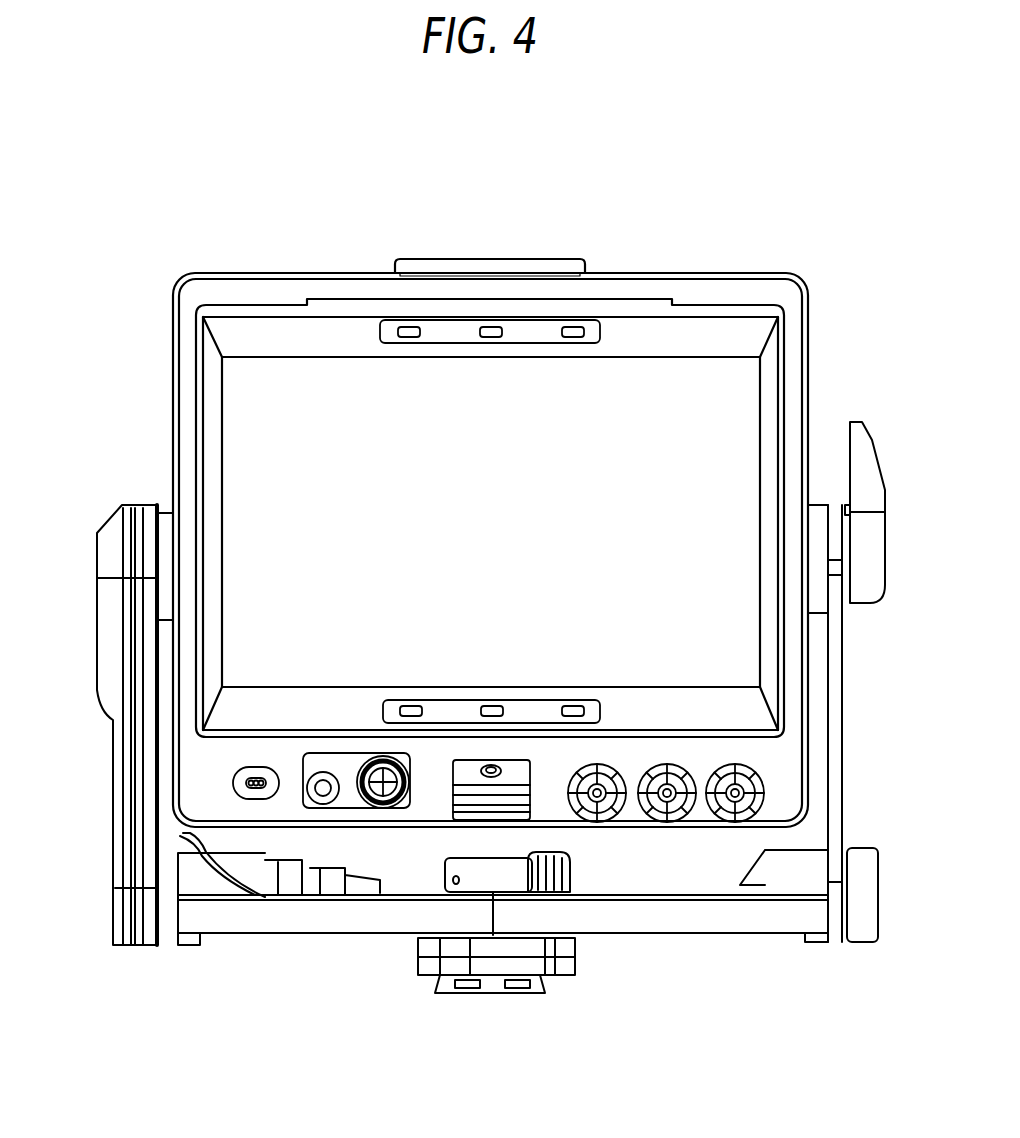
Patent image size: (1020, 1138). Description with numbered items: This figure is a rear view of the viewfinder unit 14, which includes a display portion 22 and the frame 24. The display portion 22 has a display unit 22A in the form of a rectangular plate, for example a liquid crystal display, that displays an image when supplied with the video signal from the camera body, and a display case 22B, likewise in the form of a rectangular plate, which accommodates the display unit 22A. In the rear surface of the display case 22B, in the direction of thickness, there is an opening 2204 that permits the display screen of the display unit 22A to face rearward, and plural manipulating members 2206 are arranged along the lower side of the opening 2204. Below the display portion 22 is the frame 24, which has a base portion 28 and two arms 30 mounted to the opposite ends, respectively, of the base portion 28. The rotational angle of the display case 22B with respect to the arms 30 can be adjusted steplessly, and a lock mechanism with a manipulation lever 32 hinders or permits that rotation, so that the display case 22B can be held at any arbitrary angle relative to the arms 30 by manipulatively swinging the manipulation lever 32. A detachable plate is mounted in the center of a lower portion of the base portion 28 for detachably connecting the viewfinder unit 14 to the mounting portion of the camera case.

The viewfinder unit 14 is at (238, 220).
The display portion 22 is at (738, 268).
The display unit 22A is at (740, 393).
The display case 22B is at (812, 290).
The opening 2204 is at (226, 414).
The manipulating members 2206 is at (597, 822).
The frame 24 is at (222, 940).
The base portion 28 is at (305, 940).
The arms 30 is at (107, 792).
The manipulation lever 32 is at (440, 876).